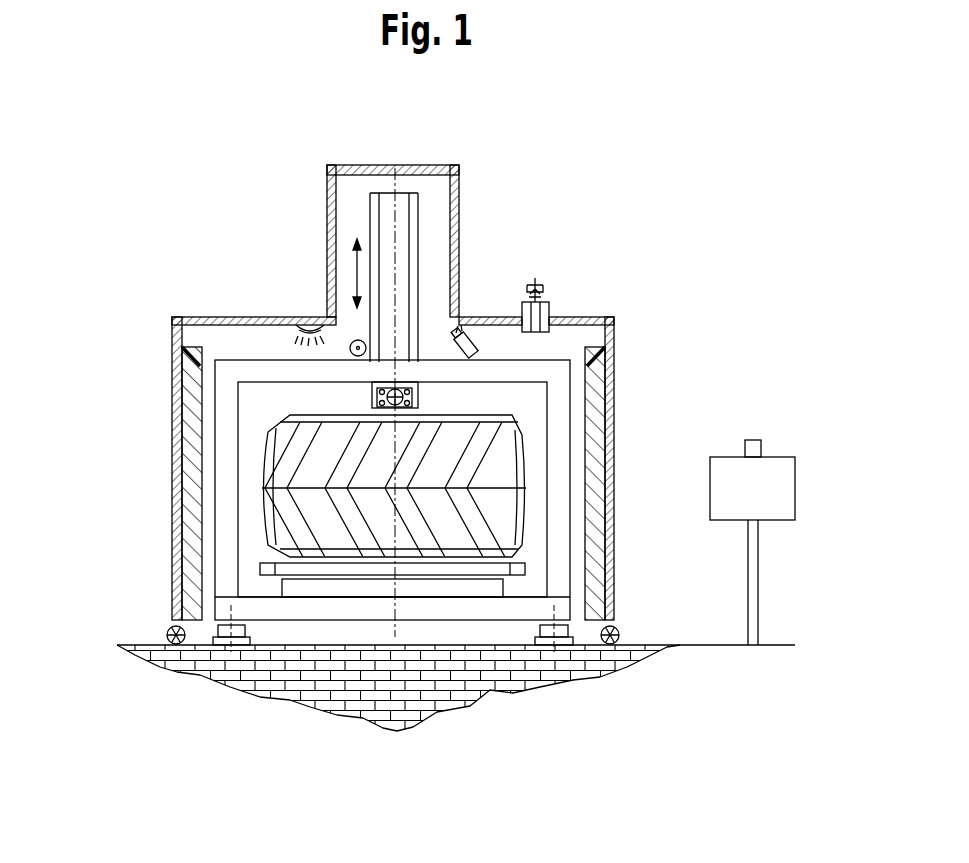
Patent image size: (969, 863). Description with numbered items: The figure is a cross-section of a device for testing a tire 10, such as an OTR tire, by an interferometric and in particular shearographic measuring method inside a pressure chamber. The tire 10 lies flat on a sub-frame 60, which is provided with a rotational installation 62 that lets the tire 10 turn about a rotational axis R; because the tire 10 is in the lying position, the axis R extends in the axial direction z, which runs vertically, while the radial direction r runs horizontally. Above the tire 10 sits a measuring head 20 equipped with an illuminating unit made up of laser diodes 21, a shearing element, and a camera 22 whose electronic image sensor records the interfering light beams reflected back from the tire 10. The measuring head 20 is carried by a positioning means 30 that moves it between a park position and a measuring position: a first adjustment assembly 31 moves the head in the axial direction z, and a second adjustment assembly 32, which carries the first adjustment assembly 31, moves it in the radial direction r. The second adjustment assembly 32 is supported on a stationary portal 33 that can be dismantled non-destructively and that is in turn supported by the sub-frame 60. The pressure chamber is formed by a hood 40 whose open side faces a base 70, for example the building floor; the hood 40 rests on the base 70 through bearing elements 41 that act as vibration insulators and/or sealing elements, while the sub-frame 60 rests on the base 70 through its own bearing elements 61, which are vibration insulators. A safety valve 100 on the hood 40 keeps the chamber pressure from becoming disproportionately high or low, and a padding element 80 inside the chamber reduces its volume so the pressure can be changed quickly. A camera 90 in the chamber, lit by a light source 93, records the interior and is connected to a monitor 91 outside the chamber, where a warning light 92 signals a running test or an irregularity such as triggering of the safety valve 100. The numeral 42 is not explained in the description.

The tire 10 is at (285, 458).
The measuring head 20 is at (422, 395).
The laser diodes 21 is at (376, 403).
The camera 22 is at (395, 408).
The positioning means 30 is at (412, 237).
The first adjustment assembly 31 is at (380, 193).
The second adjustment assembly 32 is at (372, 389).
The portal 33 is at (560, 392).
The hood 40 is at (614, 390).
The bearing elements 41 is at (168, 628).
The shaft tower 42 is at (461, 180).
The sub-frame 60 is at (323, 610).
The bearing elements 61 is at (222, 650).
The rotational installation 62 is at (478, 583).
The base 70 is at (425, 717).
The padding element 80 is at (192, 432).
The camera 90 is at (465, 324).
The monitor 91 is at (768, 497).
The warning light 92 is at (757, 445).
The light source 93 is at (300, 318).
The safety valve 100 is at (553, 304).
The rotational axis R is at (390, 632).
The axial direction z is at (353, 273).
The radial direction r is at (352, 338).